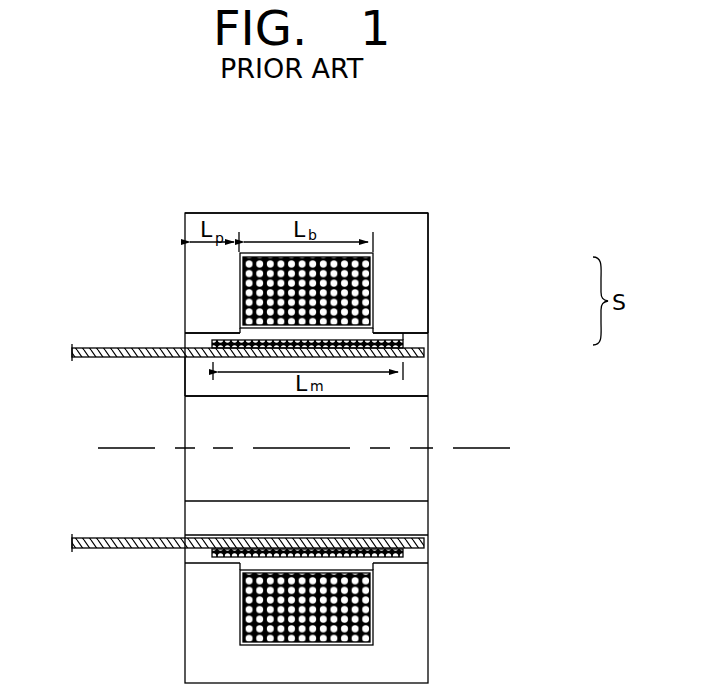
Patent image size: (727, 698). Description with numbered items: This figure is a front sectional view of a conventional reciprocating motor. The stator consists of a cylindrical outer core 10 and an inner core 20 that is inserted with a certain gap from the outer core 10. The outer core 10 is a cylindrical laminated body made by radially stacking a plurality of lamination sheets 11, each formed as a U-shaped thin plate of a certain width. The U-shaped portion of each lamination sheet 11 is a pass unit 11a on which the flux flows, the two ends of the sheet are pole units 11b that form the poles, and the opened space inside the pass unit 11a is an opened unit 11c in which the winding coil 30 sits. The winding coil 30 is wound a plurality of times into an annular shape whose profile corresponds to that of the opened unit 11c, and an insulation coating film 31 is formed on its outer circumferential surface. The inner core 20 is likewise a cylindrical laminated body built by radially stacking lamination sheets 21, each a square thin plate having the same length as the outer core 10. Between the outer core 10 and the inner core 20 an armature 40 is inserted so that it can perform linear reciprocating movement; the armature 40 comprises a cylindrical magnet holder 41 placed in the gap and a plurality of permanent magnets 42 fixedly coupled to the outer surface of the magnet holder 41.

The outer core 10 is at (452, 258).
The lamination sheet 11 is at (342, 212).
The pass unit 11a is at (415, 233).
The pole unit 11b is at (398, 338).
The opened unit 11c is at (377, 332).
The inner core 20 is at (440, 382).
The lamination sheet 21 is at (184, 383).
The winding coil 30 is at (238, 294).
The insulation coating film 31 is at (238, 270).
The armature 40 is at (428, 553).
The magnet holder 41 is at (378, 545).
The permanent magnet 42 is at (376, 573).